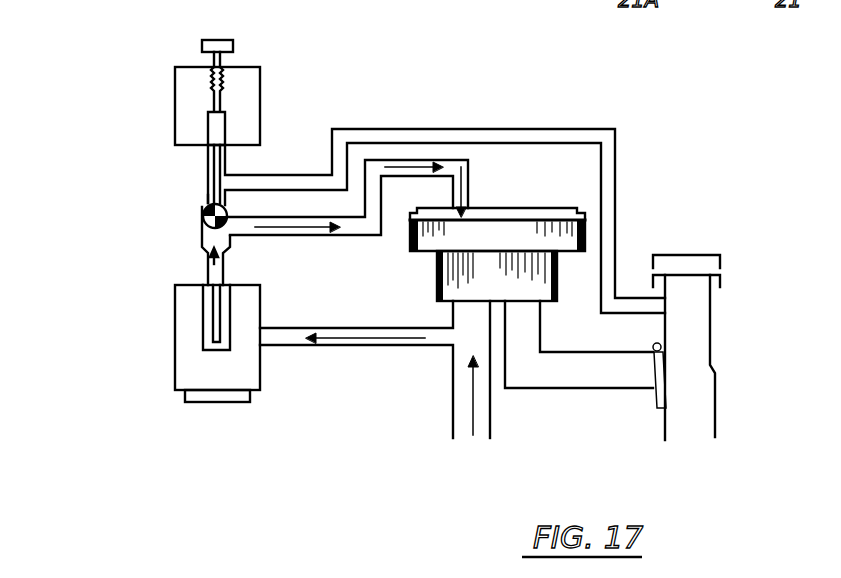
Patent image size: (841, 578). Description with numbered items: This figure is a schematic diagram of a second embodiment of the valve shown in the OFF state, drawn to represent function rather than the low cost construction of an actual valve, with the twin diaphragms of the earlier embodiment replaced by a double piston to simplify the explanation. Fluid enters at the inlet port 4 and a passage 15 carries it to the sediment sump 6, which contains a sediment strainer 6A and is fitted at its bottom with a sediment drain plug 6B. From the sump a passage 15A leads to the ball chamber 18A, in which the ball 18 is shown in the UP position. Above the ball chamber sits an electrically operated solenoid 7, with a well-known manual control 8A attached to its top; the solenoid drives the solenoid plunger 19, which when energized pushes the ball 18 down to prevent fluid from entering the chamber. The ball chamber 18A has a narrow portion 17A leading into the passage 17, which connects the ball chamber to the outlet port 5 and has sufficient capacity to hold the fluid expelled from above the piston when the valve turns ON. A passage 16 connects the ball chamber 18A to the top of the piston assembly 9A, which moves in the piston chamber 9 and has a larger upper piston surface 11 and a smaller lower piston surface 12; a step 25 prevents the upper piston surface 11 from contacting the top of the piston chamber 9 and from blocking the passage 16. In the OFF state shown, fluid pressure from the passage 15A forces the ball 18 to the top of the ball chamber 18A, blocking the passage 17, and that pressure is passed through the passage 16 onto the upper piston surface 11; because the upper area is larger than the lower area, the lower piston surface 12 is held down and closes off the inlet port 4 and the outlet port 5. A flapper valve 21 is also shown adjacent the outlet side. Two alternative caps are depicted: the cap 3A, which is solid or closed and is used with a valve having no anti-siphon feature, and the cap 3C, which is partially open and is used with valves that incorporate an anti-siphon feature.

The cap 3A is at (719, 284).
The cap 3C is at (704, 250).
The inlet port 4 is at (465, 436).
The outlet port 5 is at (685, 436).
The sediment sump 6 is at (183, 373).
The sediment strainer 6A is at (205, 322).
The sediment drain plug 6B is at (201, 405).
The electrically operated solenoid 7 is at (243, 70).
The manual control 8A is at (223, 38).
The piston chamber 9 is at (487, 207).
The piston assembly 9A is at (527, 228).
The upper piston surface 11 is at (557, 241).
The lower piston surface 12 is at (537, 281).
The passage 15 is at (342, 348).
The passage 15A is at (210, 268).
The passage 16 is at (352, 234).
The passage 17 is at (263, 181).
The narrow portion of ball chamber 17A is at (210, 186).
The ball 18 is at (202, 216).
The ball chamber 18A is at (210, 238).
The solenoid plunger 19 is at (215, 162).
The flapper valve 21 is at (650, 384).
The step 25 is at (577, 214).